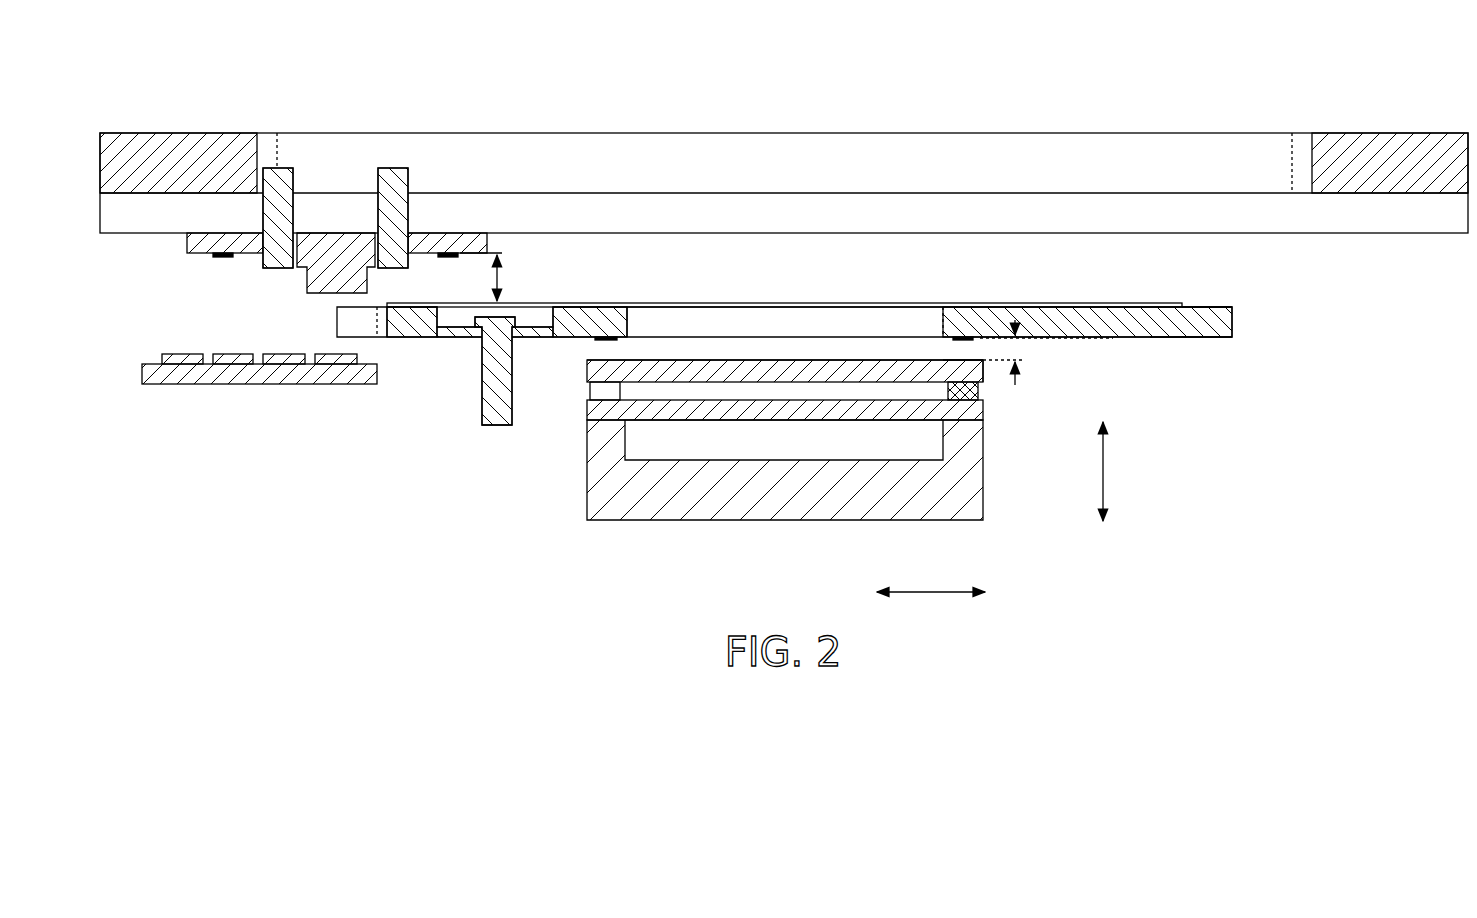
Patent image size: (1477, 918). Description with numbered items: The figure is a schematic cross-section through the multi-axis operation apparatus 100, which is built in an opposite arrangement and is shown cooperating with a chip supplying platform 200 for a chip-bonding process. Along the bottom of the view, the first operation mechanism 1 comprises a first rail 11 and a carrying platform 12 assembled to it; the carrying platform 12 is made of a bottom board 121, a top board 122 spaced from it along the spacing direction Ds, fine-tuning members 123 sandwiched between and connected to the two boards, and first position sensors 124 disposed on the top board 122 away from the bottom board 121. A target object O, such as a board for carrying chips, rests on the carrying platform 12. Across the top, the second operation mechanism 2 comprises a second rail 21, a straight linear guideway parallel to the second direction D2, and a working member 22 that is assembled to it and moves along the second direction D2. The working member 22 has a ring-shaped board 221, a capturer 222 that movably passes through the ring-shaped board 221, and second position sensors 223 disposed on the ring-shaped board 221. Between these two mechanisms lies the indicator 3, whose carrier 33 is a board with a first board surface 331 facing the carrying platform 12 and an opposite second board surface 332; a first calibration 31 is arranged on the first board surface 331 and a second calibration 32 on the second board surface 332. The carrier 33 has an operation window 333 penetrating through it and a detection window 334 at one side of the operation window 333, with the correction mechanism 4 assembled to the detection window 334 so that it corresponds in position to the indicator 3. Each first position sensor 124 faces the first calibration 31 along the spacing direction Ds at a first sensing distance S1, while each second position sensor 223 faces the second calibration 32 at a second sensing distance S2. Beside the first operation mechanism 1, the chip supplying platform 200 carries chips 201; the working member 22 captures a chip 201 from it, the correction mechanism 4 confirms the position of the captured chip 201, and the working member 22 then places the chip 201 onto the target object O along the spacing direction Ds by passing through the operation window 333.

The multi-axis operation apparatus 100 is at (1387, 88).
The first operation mechanism 1 is at (535, 592).
The first rail 11 is at (632, 523).
The carrying platform 12 is at (584, 412).
The bottom board 121 is at (842, 410).
The top board 122 is at (832, 372).
The fine-tuning member 123 is at (979, 392).
The first position sensor 124 is at (950, 360).
The second operation mechanism 2 is at (370, 68).
The second rail 21 is at (208, 131).
The working member 22 is at (336, 229).
The ring-shaped board 221 is at (200, 244).
The capturer 222 is at (327, 283).
The second position sensor 223 is at (223, 259).
The chip supplying platform 200 is at (304, 386).
The chip 201 is at (180, 354).
The indicator 3 is at (1118, 341).
The first calibration 31 is at (605, 341).
The second calibration 32 is at (1138, 303).
The carrier 33 is at (1205, 325).
The first board surface 331 is at (1196, 342).
The second board surface 332 is at (1216, 303).
The operation window 333 is at (754, 326).
The detection window 334 is at (531, 304).
The correction mechanism 4 is at (494, 430).
The target object O is at (690, 356).
The first sensing distance S1 is at (1046, 364).
The second sensing distance S2 is at (479, 277).
The spacing direction Ds is at (1083, 471).
The second direction D2 is at (931, 574).